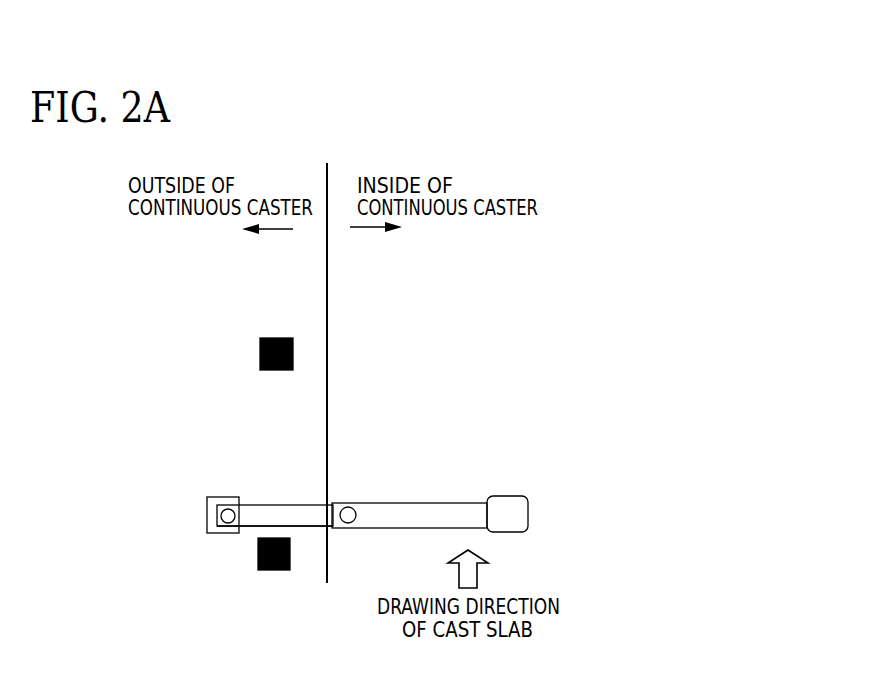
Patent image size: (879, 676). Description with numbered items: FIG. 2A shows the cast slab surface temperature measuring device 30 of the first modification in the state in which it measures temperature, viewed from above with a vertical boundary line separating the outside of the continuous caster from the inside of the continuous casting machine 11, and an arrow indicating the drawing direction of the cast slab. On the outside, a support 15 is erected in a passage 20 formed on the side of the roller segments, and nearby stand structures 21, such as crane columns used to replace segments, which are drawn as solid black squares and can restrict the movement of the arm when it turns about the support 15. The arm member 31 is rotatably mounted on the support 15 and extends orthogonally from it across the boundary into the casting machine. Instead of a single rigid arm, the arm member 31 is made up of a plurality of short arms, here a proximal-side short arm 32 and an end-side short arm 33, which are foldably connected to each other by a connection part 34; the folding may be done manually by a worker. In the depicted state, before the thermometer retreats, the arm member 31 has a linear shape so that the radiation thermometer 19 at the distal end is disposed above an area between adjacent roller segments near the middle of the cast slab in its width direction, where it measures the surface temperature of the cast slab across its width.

The continuous casting machine 11 is at (422, 168).
The support 15 is at (215, 533).
The radiation thermometer 19 is at (505, 503).
The passage 20 is at (248, 395).
The structure 21 is at (277, 338).
The cast slab surface temperature measuring device 30 is at (220, 488).
The arm member 31 is at (308, 500).
The proximal-side short arm 32 is at (307, 527).
The end-side short arm 33 is at (393, 519).
The connection part 34 is at (348, 523).